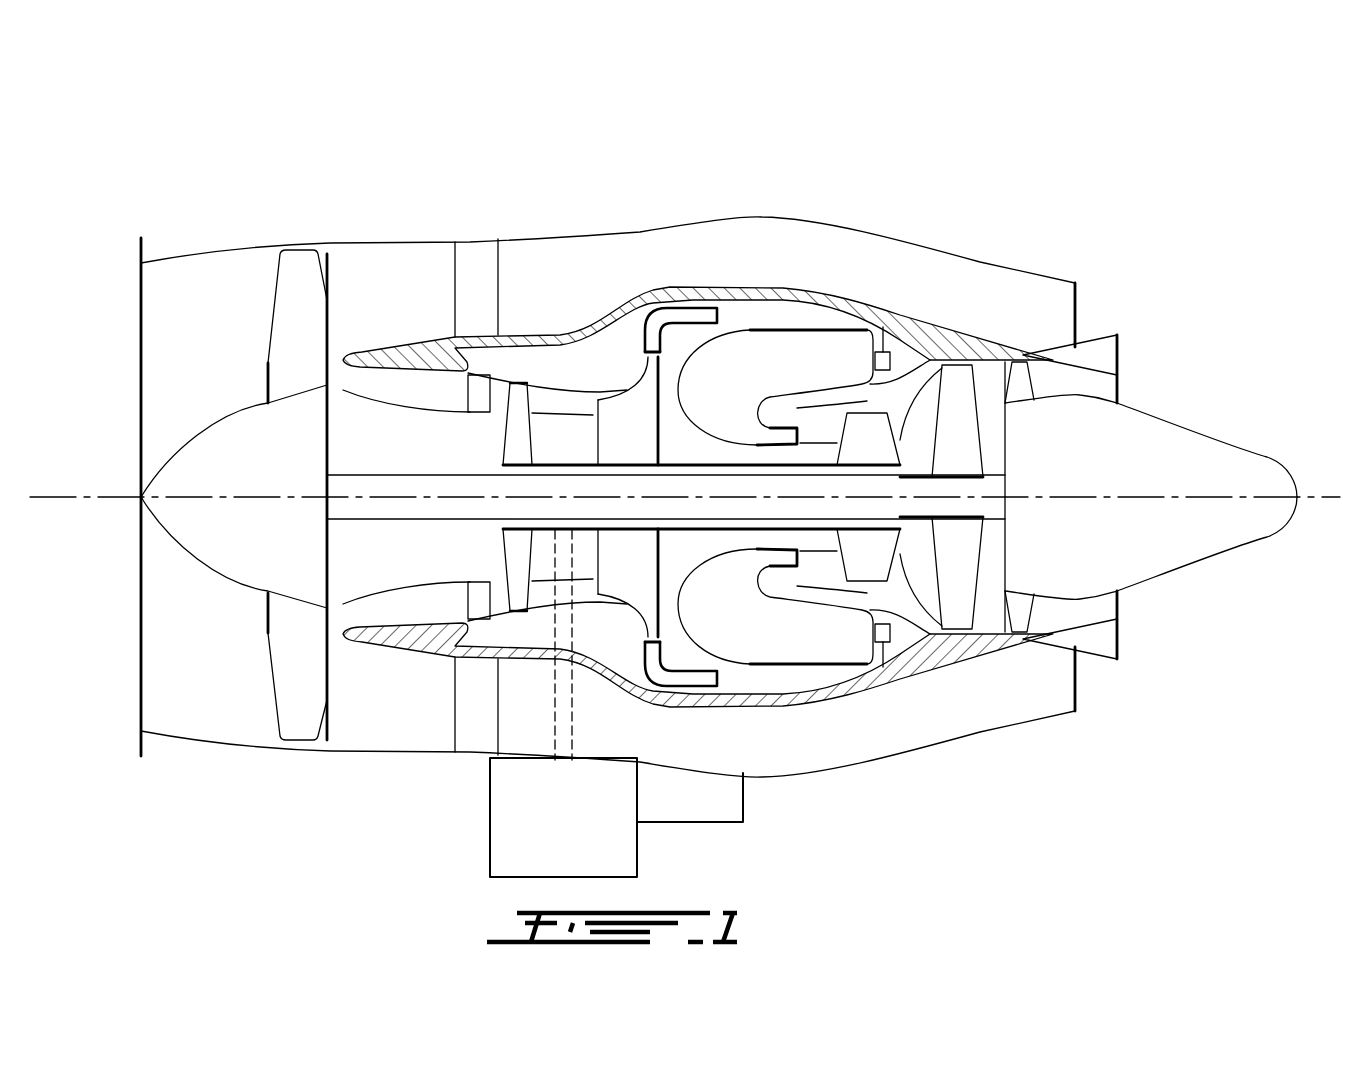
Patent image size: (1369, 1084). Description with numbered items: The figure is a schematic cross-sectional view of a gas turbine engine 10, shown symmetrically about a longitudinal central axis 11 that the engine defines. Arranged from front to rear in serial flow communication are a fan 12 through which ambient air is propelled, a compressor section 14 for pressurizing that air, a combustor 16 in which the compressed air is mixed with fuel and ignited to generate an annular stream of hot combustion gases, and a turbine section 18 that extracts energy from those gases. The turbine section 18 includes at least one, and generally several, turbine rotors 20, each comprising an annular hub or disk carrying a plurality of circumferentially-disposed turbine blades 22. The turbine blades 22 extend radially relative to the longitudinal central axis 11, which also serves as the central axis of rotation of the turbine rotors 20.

The gas turbine engine 10 is at (910, 184).
The longitudinal central axis 11 is at (1337, 497).
The fan 12 is at (293, 655).
The compressor section 14 is at (552, 393).
The combustor 16 is at (777, 347).
The turbine section 18 is at (915, 565).
The turbine rotor 20 is at (862, 410).
The turbine blade 22 is at (957, 375).